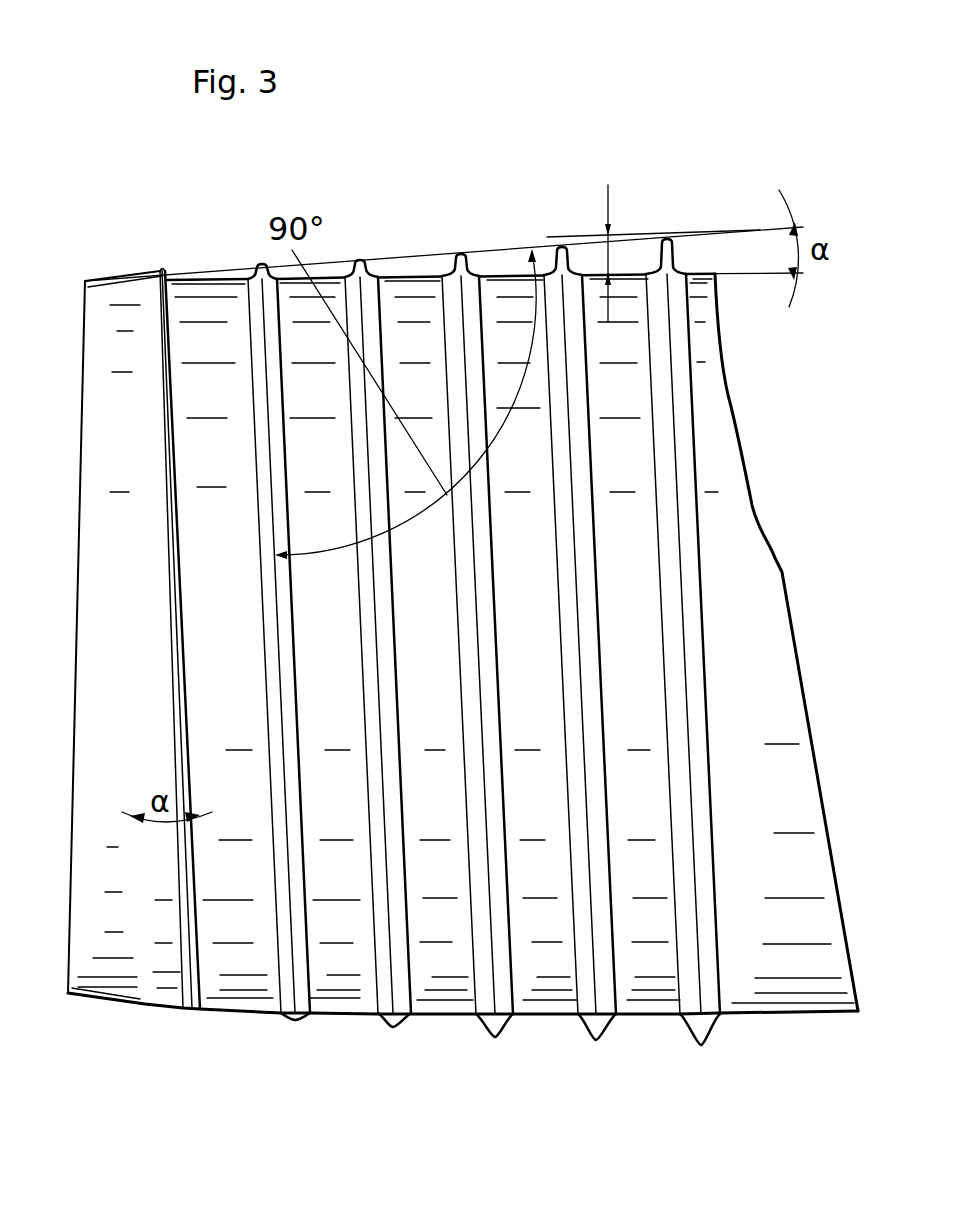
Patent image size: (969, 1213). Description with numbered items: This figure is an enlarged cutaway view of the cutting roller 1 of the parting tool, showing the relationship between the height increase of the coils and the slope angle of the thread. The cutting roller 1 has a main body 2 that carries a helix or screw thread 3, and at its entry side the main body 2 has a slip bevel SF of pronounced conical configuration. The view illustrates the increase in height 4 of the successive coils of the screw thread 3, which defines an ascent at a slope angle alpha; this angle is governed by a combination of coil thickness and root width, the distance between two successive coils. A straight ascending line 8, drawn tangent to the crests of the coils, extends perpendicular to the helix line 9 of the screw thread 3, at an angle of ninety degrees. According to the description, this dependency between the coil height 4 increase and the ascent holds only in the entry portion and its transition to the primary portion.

The cutting roller 1 is at (612, 98).
The main body 2 is at (750, 605).
The screw thread 3 is at (178, 603).
The increase in height 4 is at (653, 253).
The straight ascending line 8 is at (400, 257).
The helix line 9 is at (290, 830).
The slip bevel SF is at (95, 983).